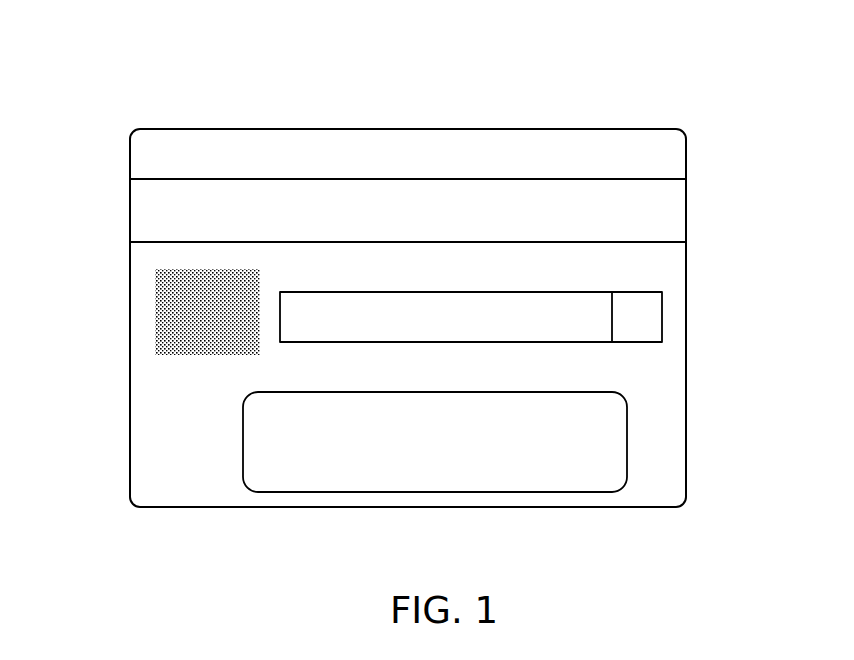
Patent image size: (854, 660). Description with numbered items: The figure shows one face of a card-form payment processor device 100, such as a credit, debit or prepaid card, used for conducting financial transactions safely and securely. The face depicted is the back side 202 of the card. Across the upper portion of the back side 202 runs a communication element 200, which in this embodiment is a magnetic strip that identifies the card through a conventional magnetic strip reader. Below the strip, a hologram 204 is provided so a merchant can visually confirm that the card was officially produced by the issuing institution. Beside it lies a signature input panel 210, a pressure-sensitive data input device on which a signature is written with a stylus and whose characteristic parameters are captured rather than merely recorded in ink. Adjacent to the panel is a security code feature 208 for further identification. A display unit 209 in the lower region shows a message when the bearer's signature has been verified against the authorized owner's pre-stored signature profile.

The payment processor device 100 is at (637, 90).
The communication element 200 is at (148, 205).
The back side 202 is at (538, 141).
The hologram 204 is at (155, 283).
The security code feature 208 is at (655, 305).
The display unit 209 is at (243, 442).
The signature input panel 210 is at (325, 312).